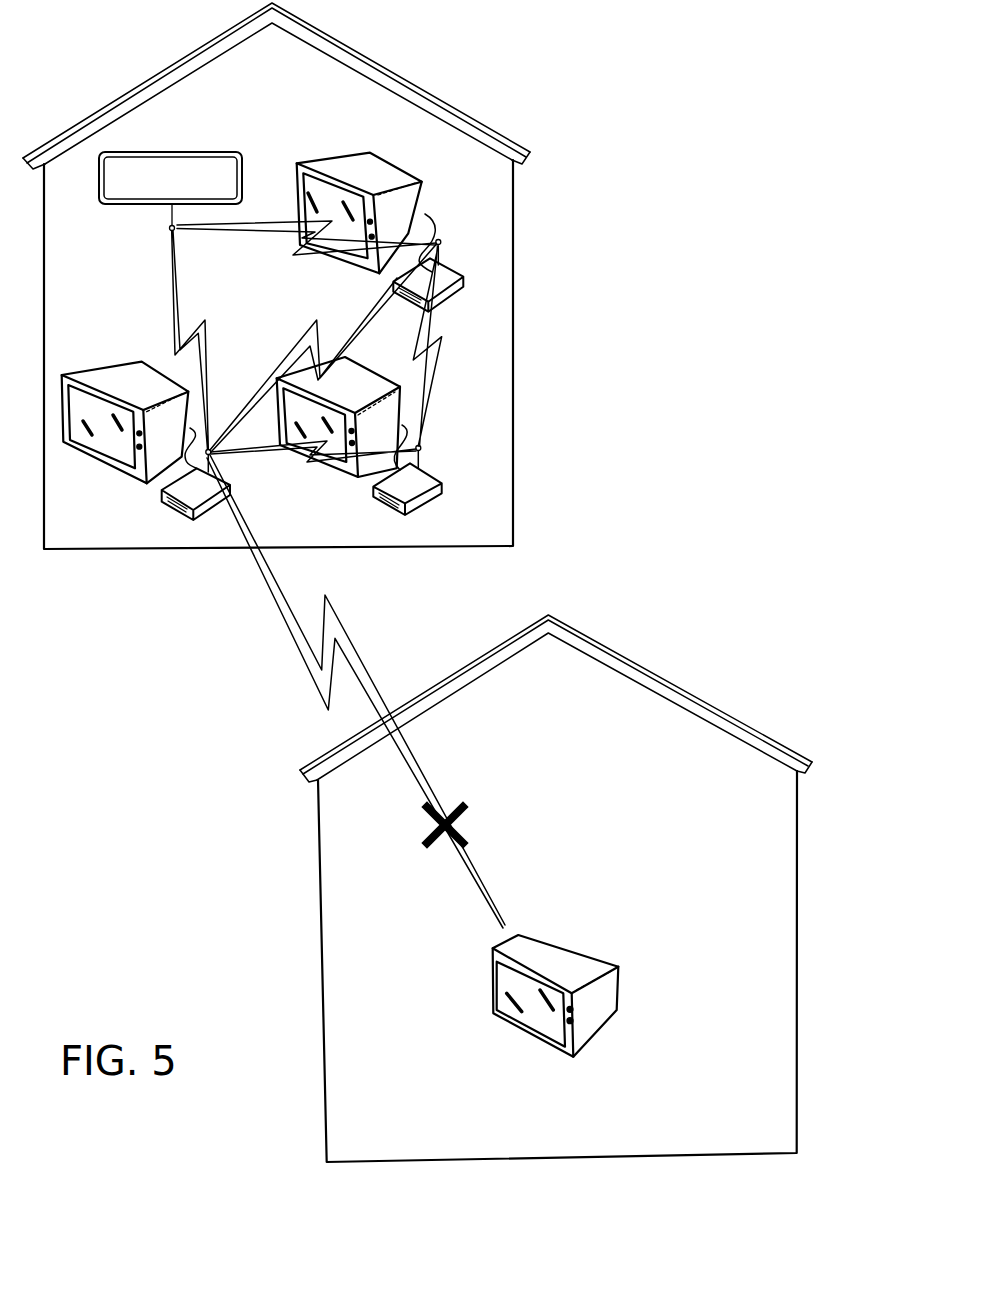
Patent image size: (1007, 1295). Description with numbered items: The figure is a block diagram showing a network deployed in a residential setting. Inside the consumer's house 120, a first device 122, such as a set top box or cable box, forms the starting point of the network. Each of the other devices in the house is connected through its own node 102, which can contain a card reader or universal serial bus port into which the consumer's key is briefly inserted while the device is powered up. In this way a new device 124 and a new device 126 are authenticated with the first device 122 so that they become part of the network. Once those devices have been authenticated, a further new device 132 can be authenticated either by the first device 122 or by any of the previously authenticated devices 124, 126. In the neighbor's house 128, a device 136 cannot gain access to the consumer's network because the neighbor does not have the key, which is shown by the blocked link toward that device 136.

The node 102 is at (179, 514).
The house 120 is at (520, 473).
The first device 122 is at (136, 205).
The new device 124 is at (87, 373).
The new device 126 is at (313, 160).
The neighbor's house 128 is at (318, 860).
The new device 132 is at (367, 377).
The device in the neighbor's home 136 is at (588, 1047).